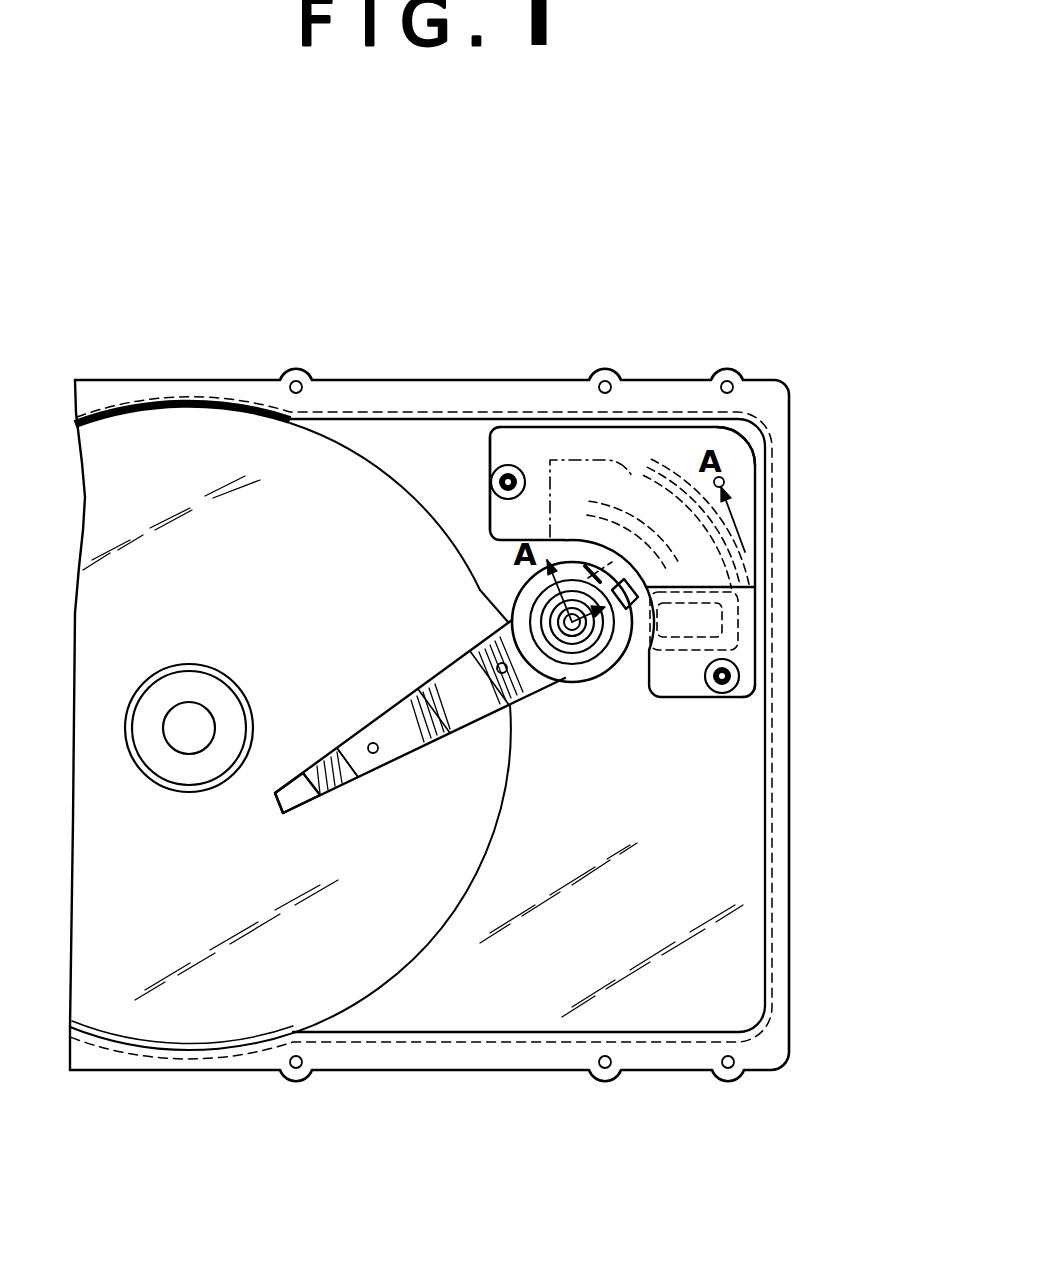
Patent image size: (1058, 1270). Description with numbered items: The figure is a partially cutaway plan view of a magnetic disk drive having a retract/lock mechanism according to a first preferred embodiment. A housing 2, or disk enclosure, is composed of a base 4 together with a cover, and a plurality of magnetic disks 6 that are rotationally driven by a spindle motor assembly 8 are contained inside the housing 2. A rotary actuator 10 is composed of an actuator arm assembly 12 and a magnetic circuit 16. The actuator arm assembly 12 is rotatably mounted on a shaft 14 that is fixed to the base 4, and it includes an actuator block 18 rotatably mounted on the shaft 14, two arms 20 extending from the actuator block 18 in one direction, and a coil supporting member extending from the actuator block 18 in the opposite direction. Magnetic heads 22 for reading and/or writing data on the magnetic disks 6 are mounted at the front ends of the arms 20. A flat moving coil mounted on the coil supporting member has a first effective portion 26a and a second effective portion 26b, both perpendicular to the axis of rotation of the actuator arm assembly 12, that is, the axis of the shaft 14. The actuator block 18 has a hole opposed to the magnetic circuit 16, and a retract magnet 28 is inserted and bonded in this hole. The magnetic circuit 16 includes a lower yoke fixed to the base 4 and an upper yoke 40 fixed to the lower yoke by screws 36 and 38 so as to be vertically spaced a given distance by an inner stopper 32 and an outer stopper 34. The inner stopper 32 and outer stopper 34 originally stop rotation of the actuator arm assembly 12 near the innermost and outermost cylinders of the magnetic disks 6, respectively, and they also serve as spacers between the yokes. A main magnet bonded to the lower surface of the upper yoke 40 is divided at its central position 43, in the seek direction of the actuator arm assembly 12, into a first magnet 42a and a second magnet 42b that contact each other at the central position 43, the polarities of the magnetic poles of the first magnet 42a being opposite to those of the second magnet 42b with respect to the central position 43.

The housing 2 is at (360, 378).
The base 4 is at (798, 788).
The magnetic disks 6 is at (383, 984).
The spindle motor assembly 8 is at (175, 690).
The rotary actuator 10 is at (555, 855).
The actuator arm assembly 12 is at (418, 690).
The shaft 14 is at (574, 626).
The magnetic circuit 16 is at (578, 417).
The actuator block 18 is at (551, 688).
The arms 20 is at (398, 722).
The magnetic heads 22 is at (285, 810).
The first effective portion 26a is at (745, 608).
The second effective portion 26b is at (598, 525).
The retract magnet 28 is at (638, 590).
The inner stopper 32 is at (738, 677).
The outer stopper 34 is at (490, 428).
The screw 36 is at (721, 694).
The screw 38 is at (492, 480).
The upper yoke 40 is at (748, 458).
The first magnet 42a is at (745, 636).
The second magnet 42b is at (550, 460).
The central position 43 is at (640, 532).